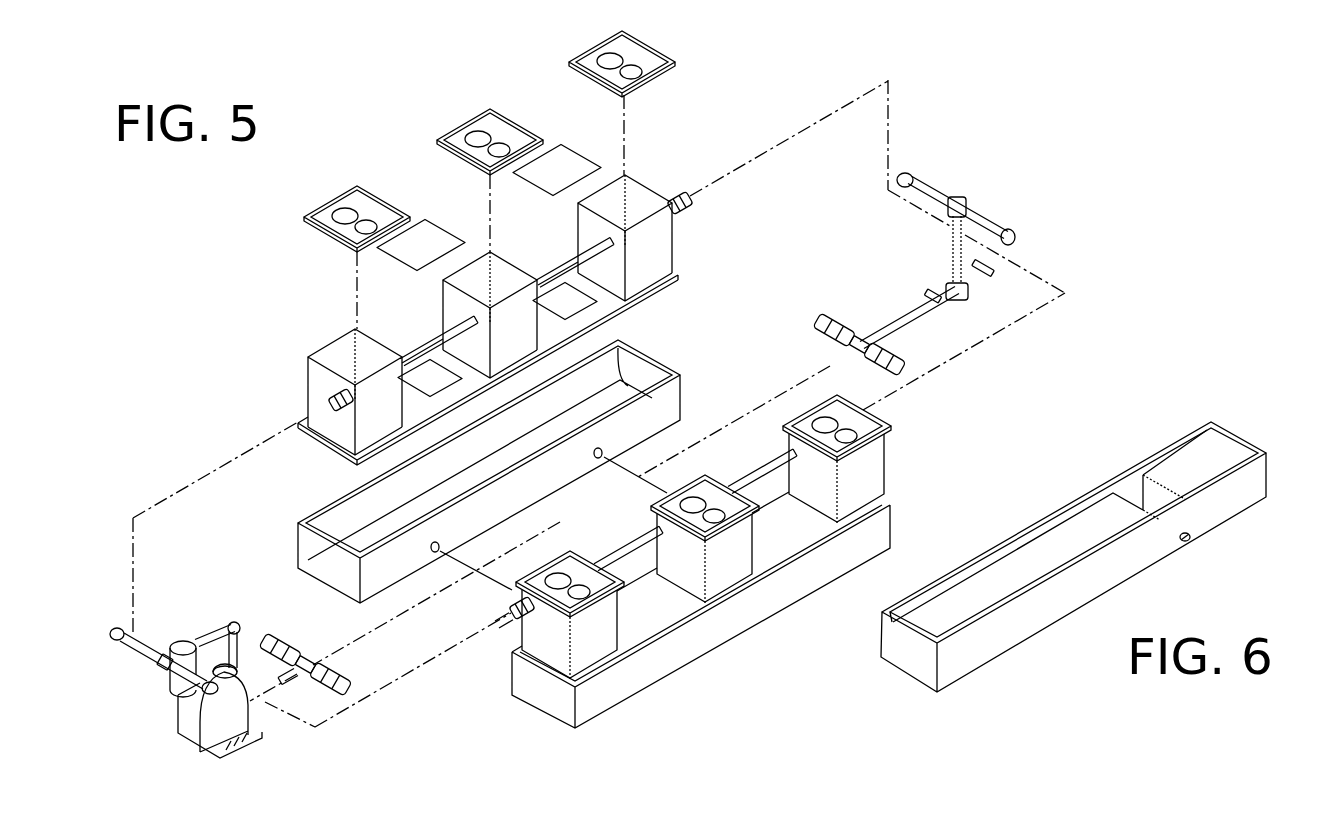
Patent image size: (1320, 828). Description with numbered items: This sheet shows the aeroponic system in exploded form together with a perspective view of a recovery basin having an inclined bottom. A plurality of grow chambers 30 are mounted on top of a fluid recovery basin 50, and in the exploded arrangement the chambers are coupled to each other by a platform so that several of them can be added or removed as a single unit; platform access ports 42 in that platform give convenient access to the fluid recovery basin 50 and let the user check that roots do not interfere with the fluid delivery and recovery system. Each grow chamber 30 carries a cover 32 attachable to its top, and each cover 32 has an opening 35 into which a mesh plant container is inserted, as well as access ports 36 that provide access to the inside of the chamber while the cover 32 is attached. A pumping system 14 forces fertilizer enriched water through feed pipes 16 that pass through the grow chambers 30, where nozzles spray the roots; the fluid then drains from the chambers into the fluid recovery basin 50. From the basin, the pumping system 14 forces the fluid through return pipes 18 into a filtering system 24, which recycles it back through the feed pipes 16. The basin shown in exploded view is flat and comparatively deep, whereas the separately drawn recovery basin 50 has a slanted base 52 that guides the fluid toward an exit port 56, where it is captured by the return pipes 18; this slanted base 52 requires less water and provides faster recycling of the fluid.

In FIG. 5, the pumping system 14 is at (247, 745).
In FIG. 5, the feed pipes 16 is at (632, 547).
In FIG. 5, the return pipes 18 is at (848, 328).
In FIG. 5, the filtering system 24 is at (178, 690).
In FIG. 5, the grow chambers 30 is at (313, 388).
In FIG. 5, the covers 32 is at (362, 210).
In FIG. 5, the opening 35 is at (848, 432).
In FIG. 5, the access ports 36 is at (822, 413).
In FIG. 5, the platform access ports 42 is at (435, 238).
In FIG. 5, the fluid recovery basin 50 is at (310, 556).
In FIG. 6, the fluid recovery basin 50 is at (972, 650).
In FIG. 5, the slanted base 52 is at (625, 400).
In FIG. 6, the slanted base 52 is at (1047, 545).
In FIG. 6, the exit port 56 is at (1193, 540).